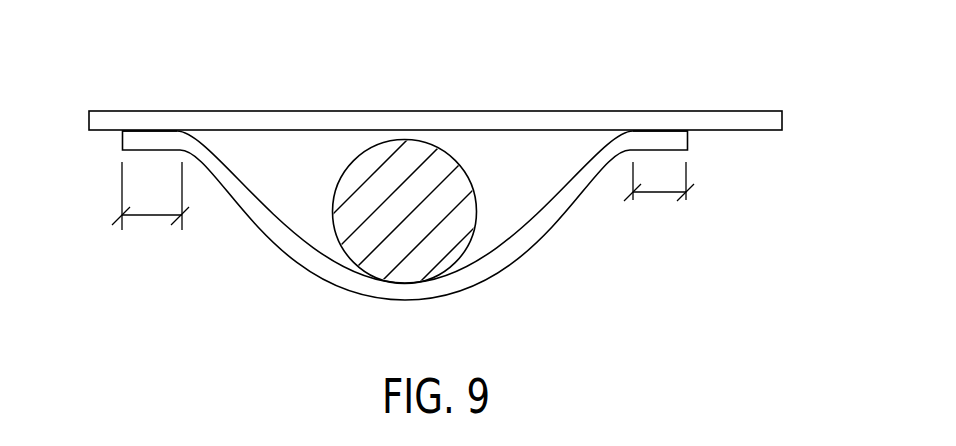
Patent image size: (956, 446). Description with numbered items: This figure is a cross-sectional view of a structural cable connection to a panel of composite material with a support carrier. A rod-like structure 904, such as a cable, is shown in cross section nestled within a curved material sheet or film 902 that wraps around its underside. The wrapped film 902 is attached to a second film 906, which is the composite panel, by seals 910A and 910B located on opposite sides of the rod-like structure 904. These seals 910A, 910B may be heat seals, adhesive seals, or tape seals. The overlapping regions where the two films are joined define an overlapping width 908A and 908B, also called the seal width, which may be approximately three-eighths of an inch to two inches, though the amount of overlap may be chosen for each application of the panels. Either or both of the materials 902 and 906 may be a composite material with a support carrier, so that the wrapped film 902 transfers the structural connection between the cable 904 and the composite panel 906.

The film 902 is at (472, 281).
The rod-like structure 904 is at (465, 212).
The film 906 is at (520, 123).
The overlapping width 908A is at (152, 216).
The overlapping width 908B is at (658, 193).
The seal 910A is at (150, 133).
The seal 910B is at (655, 133).